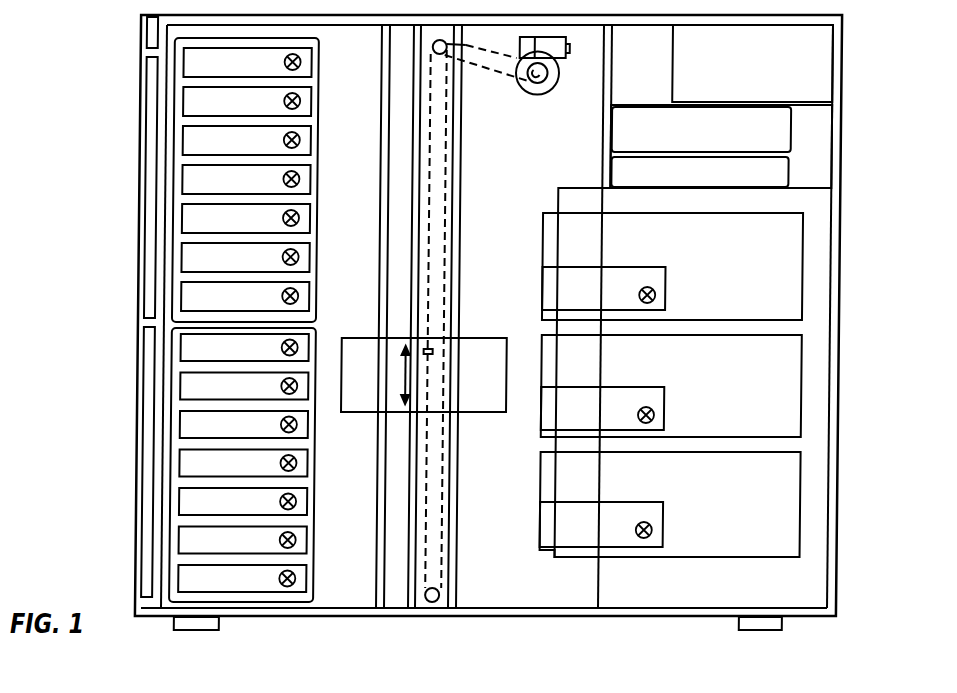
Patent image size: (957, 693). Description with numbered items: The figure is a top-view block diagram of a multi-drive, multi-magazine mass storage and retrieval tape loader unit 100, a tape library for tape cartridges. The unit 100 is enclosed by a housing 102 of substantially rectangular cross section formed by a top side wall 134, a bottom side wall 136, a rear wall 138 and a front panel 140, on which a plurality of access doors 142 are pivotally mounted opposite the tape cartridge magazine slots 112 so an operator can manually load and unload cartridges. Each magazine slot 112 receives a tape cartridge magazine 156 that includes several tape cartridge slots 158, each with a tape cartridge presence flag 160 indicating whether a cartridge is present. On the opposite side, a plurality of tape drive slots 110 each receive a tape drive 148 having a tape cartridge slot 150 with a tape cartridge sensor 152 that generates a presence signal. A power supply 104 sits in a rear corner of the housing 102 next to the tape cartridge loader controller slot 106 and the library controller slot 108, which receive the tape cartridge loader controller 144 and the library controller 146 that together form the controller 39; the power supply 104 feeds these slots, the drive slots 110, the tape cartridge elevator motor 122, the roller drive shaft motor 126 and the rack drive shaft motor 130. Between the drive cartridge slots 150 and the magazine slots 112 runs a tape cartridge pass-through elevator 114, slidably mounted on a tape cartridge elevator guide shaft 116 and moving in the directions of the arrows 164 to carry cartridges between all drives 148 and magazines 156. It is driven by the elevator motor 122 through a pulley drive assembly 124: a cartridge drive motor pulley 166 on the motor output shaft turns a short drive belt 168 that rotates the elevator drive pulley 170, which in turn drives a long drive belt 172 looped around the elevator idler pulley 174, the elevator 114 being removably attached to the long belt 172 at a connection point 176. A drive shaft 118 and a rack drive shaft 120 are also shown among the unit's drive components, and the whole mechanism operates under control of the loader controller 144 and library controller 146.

The mass storage and retrieval tape loader unit 100 is at (83, 320).
The housing 102 is at (626, 12).
The power supply 104 is at (827, 88).
The tape cartridge loader controller slot 106 is at (792, 137).
The library controller slot 108 is at (792, 172).
The tape drive slots 110 is at (805, 240).
The tape cartridge magazine slots 112 is at (319, 132).
The tape cartridge pass-through elevator 114 is at (491, 413).
The tape cartridge elevator guide shaft 116 is at (382, 173).
The drive shaft 118 is at (414, 197).
The rack drive shaft 120 is at (463, 217).
The tape cartridge elevator motor 122 is at (519, 95).
The pulley drive assembly 124 is at (428, 44).
The roller drive shaft motor 126 is at (567, 53).
The rack drive shaft motor 130 is at (520, 43).
The top side wall 134 is at (345, 17).
The bottom side wall 136 is at (649, 611).
The rear wall 138 is at (841, 16).
The front panel 140 is at (141, 17).
The access doors 142 is at (145, 140).
The tape cartridge loader controller 144 is at (623, 118).
The library controller 146 is at (604, 160).
The tape drive 148 is at (790, 268).
The tape cartridge slot 150 is at (583, 267).
The tape cartridge sensor 152 is at (668, 295).
The tape cartridge magazine 156 is at (180, 176).
The tape cartridge slots 158 is at (316, 569).
The tape cartridge presence flag 160 is at (303, 583).
The arrows 164 is at (408, 379).
The cartridge drive motor pulley 166 is at (532, 84).
The short drive belt 168 is at (482, 68).
The elevator drive pulley 170 is at (433, 45).
The long drive belt 172 is at (447, 262).
The elevator idler pulley 174 is at (446, 593).
The connection point 176 is at (426, 350).
The controller 39 is at (790, 196).